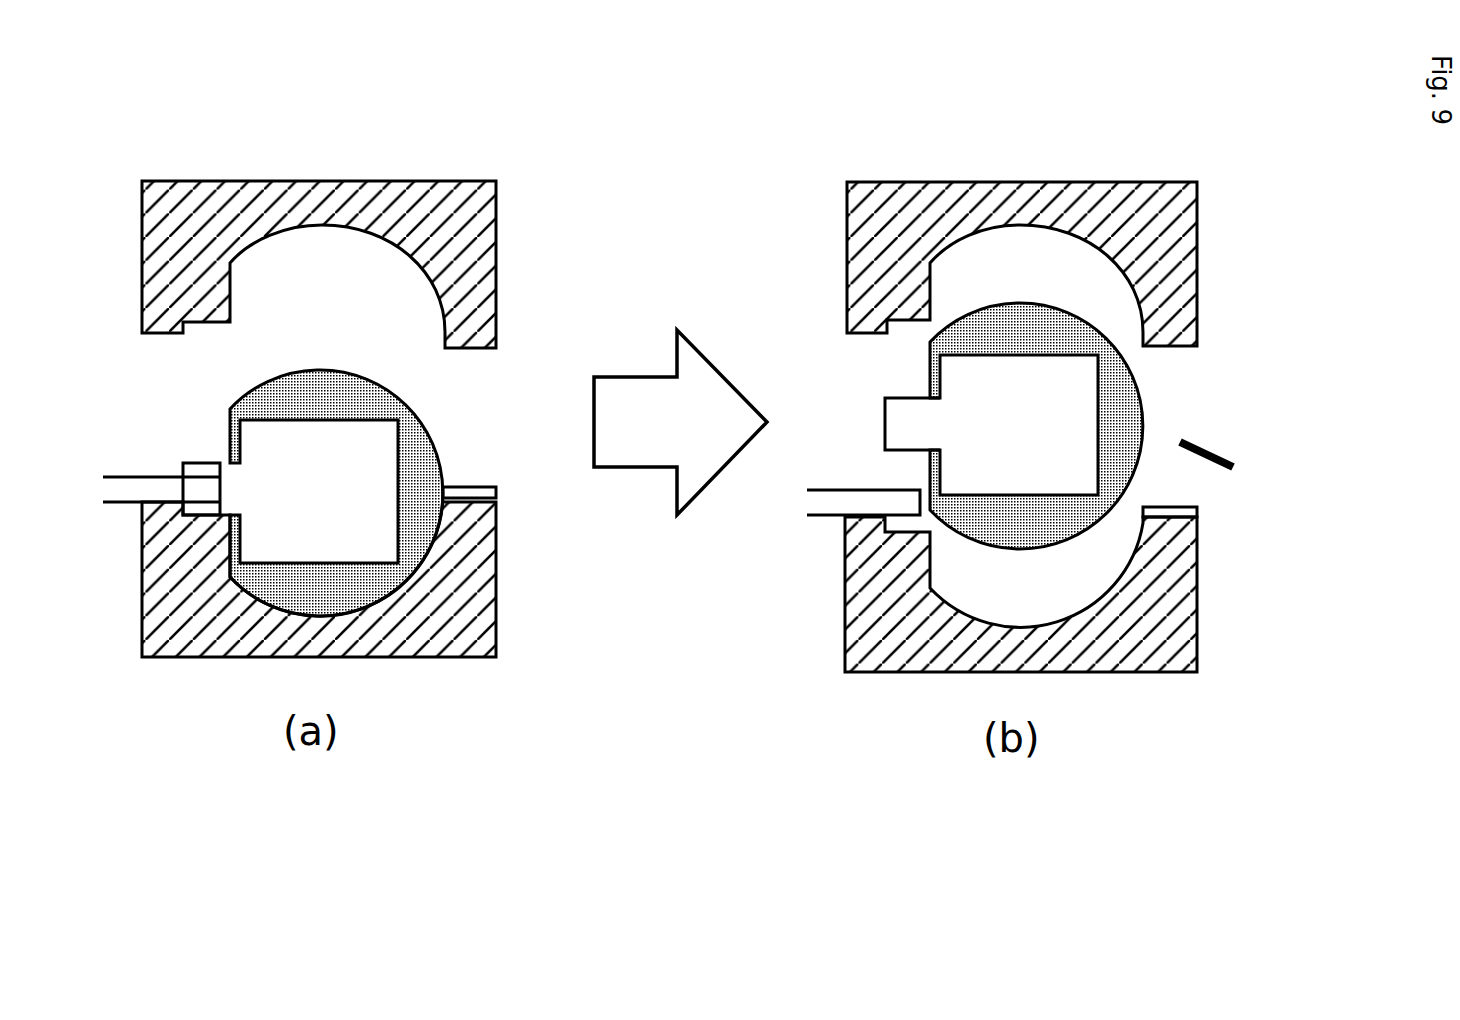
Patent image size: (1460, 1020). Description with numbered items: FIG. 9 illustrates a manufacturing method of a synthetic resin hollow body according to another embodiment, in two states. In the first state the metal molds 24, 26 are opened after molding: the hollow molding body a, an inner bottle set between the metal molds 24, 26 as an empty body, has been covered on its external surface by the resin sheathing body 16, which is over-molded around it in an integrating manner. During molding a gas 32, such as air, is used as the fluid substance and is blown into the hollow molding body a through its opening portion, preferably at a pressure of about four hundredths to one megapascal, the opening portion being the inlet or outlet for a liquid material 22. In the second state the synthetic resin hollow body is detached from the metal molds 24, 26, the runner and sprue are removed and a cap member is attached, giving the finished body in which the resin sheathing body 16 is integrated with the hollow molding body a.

The resin sheathing body 16 is at (428, 448).
The liquid material 22 is at (992, 470).
The metal mold 24 is at (447, 658).
The metal mold 26 is at (413, 205).
The gas 32 is at (308, 447).
The hollow molding body a is at (267, 567).